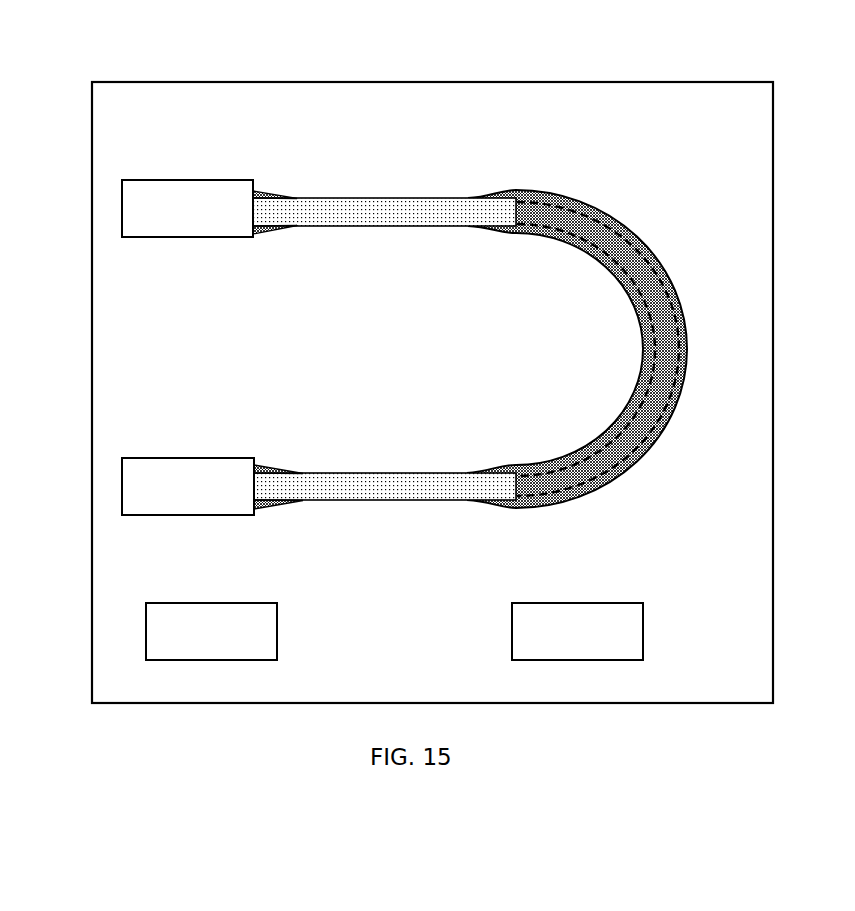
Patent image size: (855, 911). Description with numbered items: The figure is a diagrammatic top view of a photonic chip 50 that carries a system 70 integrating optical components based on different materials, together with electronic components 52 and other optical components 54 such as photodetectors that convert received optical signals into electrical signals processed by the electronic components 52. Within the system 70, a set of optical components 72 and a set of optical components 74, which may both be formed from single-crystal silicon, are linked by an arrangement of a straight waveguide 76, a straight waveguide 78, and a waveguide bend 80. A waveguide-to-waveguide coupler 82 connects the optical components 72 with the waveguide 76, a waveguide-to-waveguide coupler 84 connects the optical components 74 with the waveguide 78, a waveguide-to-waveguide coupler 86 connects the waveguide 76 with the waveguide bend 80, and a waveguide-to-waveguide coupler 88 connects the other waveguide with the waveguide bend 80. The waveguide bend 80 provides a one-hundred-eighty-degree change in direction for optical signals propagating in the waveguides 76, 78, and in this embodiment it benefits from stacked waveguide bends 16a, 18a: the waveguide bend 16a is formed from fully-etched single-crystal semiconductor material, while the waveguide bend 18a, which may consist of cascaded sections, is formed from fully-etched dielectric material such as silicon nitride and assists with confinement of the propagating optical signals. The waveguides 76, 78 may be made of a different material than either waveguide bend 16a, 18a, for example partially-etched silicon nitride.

The photonic chip 50 is at (123, 48).
The system 70 is at (621, 322).
The waveguide bend 80 is at (657, 408).
The waveguide bend 16a is at (660, 270).
The waveguide bend 18a is at (671, 303).
The optical components 72 is at (210, 190).
The optical components 74 is at (210, 467).
The waveguide 76 is at (382, 215).
The waveguide 78 is at (390, 487).
The waveguide-to-waveguide coupler 82 is at (270, 178).
The waveguide-to-waveguide coupler 84 is at (283, 453).
The waveguide-to-waveguide coupler 86 is at (507, 173).
The waveguide-to-waveguide coupler 88 is at (490, 455).
The electronic components 52 is at (277, 637).
The optical components 54 is at (643, 637).